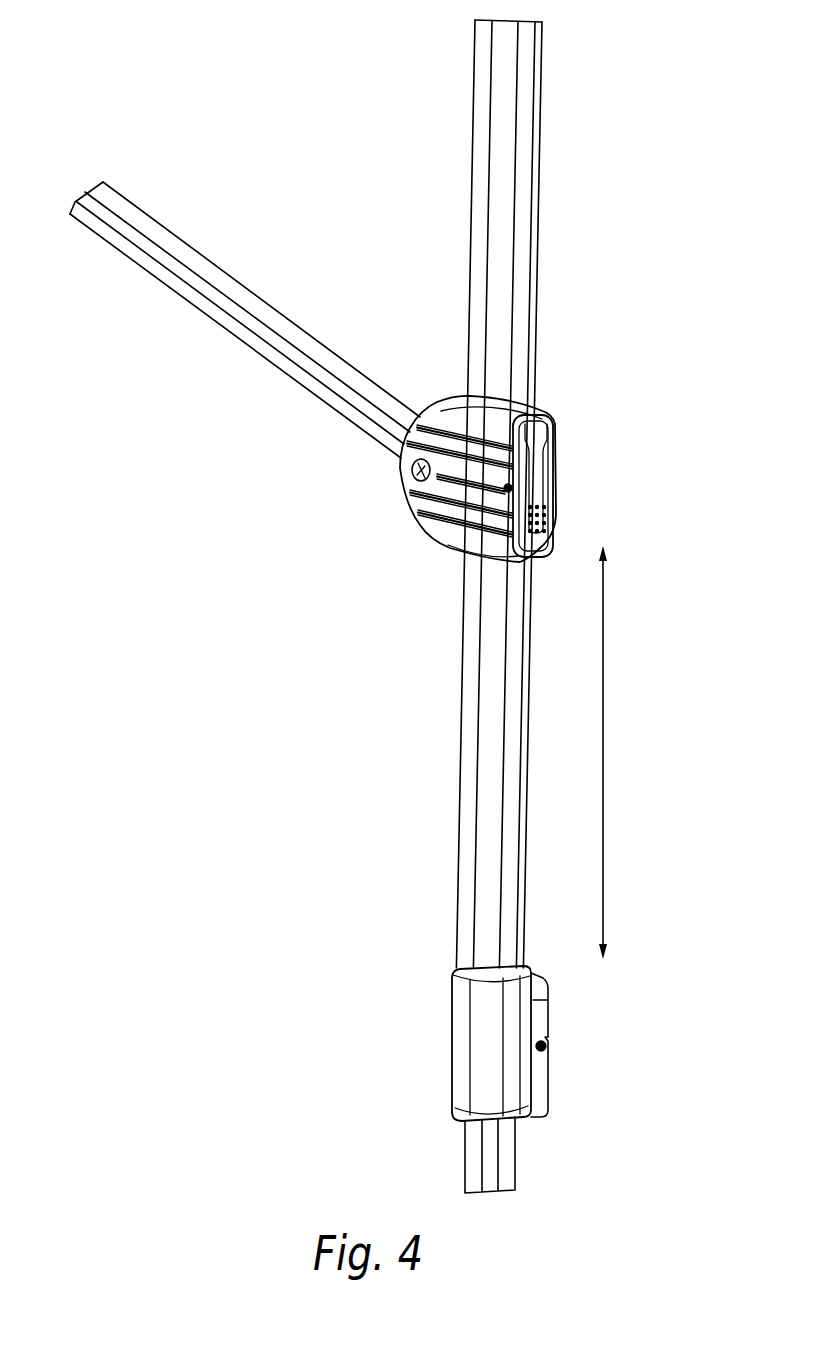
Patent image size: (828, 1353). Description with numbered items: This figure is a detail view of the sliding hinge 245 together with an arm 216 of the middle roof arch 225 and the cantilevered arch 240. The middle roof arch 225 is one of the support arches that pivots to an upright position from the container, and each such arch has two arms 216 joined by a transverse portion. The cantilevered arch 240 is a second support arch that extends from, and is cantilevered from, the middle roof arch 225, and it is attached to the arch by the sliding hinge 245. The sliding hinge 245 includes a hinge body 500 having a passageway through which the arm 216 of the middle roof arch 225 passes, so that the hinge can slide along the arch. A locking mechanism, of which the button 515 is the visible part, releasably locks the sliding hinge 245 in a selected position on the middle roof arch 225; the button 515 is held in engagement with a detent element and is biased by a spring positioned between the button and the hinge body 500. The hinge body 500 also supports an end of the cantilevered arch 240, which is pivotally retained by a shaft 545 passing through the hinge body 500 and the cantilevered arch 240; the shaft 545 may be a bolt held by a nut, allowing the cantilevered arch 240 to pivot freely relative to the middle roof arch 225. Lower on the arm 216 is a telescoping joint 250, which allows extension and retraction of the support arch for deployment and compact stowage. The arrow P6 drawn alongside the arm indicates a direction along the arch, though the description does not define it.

The arm 216 is at (548, 606).
The middle roof arch 225 is at (505, 85).
The cantilevered arch 240 is at (162, 256).
The hinge body 500 is at (438, 414).
The shaft 545 is at (412, 480).
The sliding hinge 245 is at (490, 477).
The button 515 is at (551, 523).
The telescoping joint 250 is at (483, 1047).
The adjustment direction arrow P6 is at (605, 752).